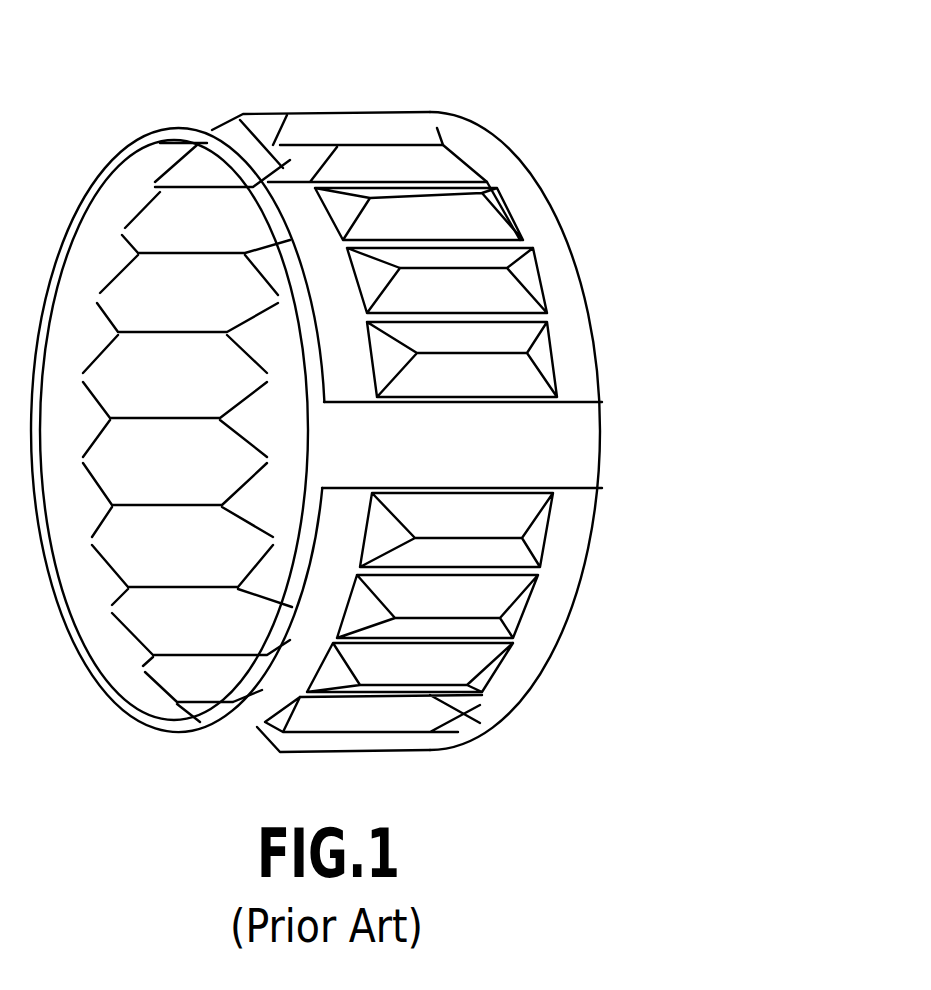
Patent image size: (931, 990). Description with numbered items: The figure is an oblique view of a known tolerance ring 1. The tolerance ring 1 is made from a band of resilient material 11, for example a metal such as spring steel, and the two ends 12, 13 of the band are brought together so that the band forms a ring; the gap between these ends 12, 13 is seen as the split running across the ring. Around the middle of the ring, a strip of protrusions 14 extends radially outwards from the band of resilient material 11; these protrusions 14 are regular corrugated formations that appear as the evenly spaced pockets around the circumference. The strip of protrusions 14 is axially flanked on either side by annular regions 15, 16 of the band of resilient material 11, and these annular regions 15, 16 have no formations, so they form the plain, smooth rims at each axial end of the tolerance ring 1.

The tolerance ring 1 is at (493, 137).
The band of resilient material 11 is at (597, 340).
The end of the band 12 is at (600, 402).
The end of the band 13 is at (600, 488).
The protrusions 14 is at (433, 693).
The annular region 15 is at (530, 210).
The annular region 16 is at (233, 127).